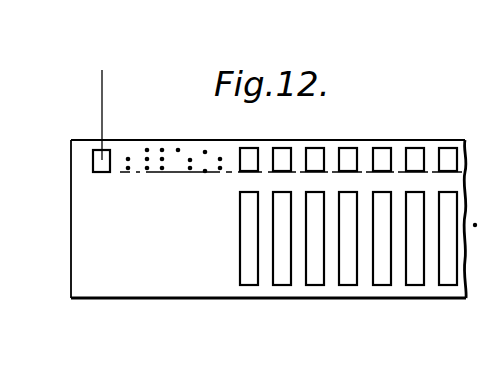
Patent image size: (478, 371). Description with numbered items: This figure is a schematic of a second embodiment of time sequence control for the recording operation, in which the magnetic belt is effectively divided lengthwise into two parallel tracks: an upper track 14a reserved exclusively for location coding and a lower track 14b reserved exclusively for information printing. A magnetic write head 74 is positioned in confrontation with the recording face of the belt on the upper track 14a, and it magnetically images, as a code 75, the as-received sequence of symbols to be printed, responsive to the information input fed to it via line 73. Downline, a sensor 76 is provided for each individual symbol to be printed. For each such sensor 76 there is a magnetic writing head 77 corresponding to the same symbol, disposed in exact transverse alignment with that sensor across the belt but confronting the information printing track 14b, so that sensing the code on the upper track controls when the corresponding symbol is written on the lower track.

The upper track 14a is at (122, 176).
The lower track 14b is at (115, 284).
The line 73 is at (102, 72).
The magnetic write head 74 is at (100, 161).
The code 75 is at (228, 141).
The sensor 76 is at (451, 148).
The magnetic writing head 77 is at (450, 286).